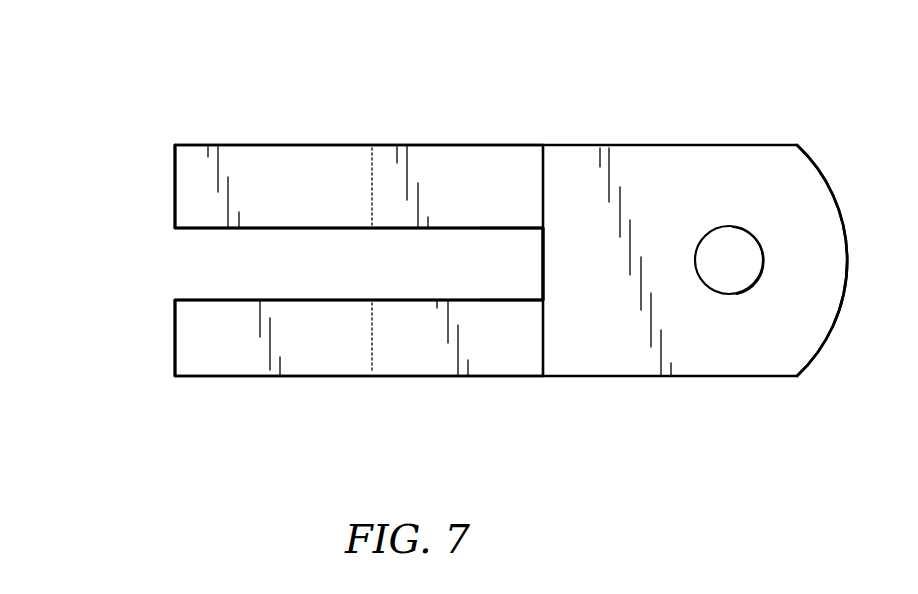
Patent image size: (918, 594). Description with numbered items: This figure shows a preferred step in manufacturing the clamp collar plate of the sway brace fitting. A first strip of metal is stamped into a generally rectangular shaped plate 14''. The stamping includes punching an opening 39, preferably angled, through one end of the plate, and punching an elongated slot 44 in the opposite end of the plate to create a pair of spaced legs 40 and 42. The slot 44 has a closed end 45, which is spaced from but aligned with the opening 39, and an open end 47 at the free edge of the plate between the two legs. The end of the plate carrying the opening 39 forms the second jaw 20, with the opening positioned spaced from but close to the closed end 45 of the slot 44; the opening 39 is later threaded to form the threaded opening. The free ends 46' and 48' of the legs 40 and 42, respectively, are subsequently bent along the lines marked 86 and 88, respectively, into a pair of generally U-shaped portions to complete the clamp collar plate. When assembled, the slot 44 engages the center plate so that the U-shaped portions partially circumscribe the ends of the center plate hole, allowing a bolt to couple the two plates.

The generally rectangular shaped plate 14'' is at (511, 198).
The second jaw 20 is at (737, 352).
The opening 39 is at (735, 263).
The leg 40 is at (398, 352).
The leg 42 is at (453, 173).
The slot 44 is at (492, 265).
The closed end 45 is at (542, 258).
The free end 46' is at (181, 381).
The open end 47 is at (193, 267).
The free end 48' is at (222, 140).
The bend line 86 is at (370, 348).
The bend line 88 is at (372, 168).